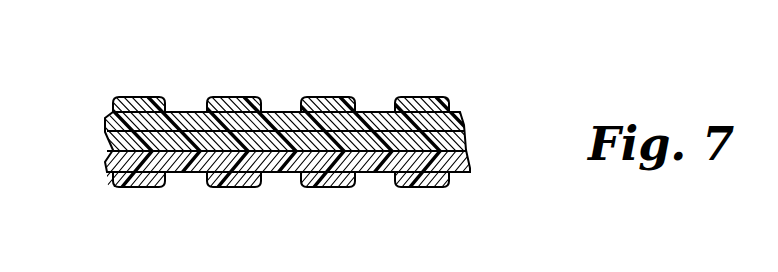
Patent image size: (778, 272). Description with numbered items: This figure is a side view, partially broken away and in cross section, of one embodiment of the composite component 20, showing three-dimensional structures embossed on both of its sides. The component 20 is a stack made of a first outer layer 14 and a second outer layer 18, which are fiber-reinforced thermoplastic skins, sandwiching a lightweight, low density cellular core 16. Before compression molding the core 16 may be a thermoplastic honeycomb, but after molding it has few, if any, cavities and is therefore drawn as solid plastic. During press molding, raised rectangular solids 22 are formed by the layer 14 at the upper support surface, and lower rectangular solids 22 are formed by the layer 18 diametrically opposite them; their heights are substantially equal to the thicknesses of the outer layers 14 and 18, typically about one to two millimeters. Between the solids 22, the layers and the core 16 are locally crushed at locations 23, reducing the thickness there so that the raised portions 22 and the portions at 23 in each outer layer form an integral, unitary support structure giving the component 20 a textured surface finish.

The component 20 is at (86, 107).
The outer layer 14 is at (460, 122).
The cellular core 16 is at (432, 108).
The outer layer 18 is at (470, 170).
The rectangular solids 22 is at (146, 97).
The locations 23 is at (192, 110).